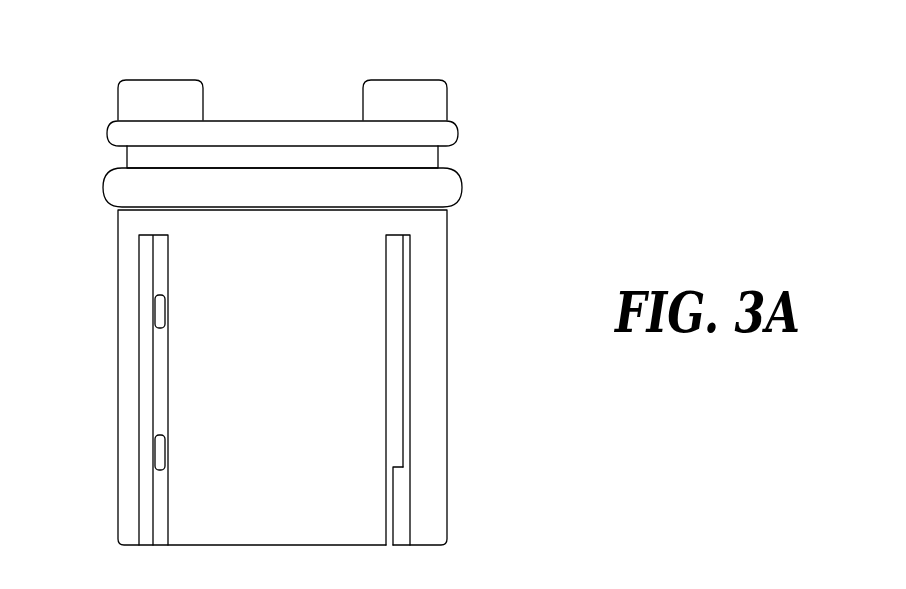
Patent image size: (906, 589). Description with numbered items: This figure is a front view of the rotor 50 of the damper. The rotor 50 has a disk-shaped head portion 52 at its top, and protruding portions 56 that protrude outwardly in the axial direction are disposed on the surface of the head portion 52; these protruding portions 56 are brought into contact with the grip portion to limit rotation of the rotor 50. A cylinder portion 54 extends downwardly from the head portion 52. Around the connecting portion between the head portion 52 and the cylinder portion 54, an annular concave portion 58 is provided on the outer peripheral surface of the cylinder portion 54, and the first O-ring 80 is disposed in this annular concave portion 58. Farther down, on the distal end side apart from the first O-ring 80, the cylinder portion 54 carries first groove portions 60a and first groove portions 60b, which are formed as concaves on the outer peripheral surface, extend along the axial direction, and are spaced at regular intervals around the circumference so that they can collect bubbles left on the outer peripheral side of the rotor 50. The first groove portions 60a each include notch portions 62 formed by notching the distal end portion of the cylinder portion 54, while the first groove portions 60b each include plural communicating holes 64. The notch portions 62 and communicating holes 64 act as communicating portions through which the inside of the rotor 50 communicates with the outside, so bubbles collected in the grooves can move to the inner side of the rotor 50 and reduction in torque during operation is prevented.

The rotor 50 is at (289, 278).
The head portion 52 is at (282, 127).
The cylinder portion 54 is at (340, 298).
The protruding portions 56 is at (154, 87).
The annular concave portion 58 is at (163, 163).
The first groove portions 60a is at (395, 423).
The first groove portions 60b is at (157, 368).
The notch portions 62 is at (410, 505).
The communicating holes 64 is at (158, 308).
The first O-ring 80 is at (452, 183).